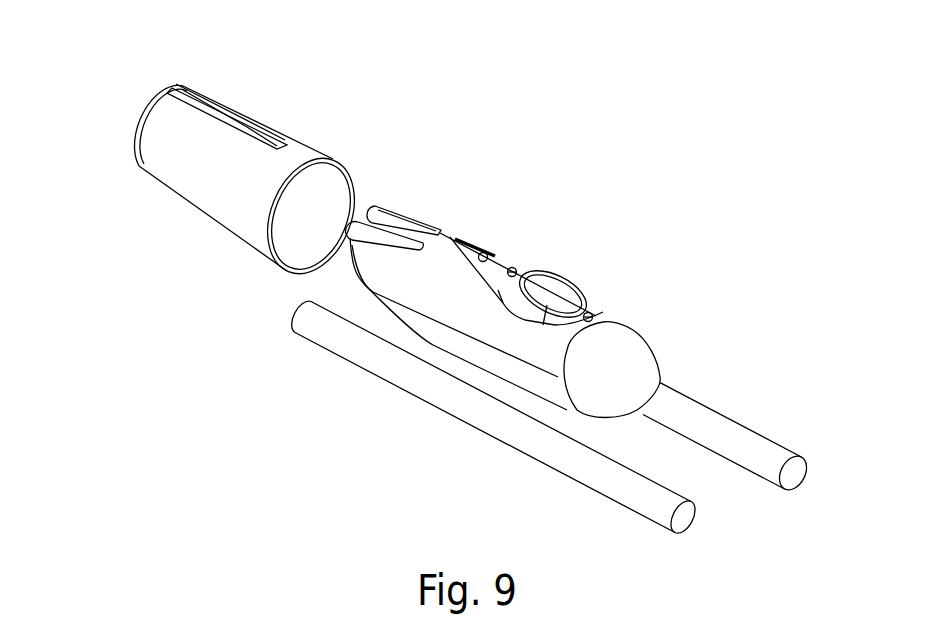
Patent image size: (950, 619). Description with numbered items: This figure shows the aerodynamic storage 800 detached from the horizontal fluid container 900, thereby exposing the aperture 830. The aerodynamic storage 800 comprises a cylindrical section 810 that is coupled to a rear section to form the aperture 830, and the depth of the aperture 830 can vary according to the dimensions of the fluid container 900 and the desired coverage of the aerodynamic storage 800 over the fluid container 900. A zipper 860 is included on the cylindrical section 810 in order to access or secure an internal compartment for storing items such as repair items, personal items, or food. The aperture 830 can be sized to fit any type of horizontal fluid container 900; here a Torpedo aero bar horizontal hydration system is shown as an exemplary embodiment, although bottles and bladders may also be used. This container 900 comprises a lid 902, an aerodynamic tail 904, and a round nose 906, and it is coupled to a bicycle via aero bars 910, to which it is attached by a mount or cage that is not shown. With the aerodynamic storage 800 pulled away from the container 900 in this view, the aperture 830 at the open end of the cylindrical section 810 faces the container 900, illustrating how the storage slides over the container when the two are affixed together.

The aerodynamic storage 800 is at (128, 98).
The cylindrical section 810 is at (285, 163).
The aperture 830 is at (331, 226).
The zipper 860 is at (217, 102).
The horizontal fluid container 900 is at (585, 355).
The lid 902 is at (553, 297).
The aerodynamic tail 904 is at (400, 260).
The round nose 906 is at (633, 372).
The aero bars 910 is at (752, 440).